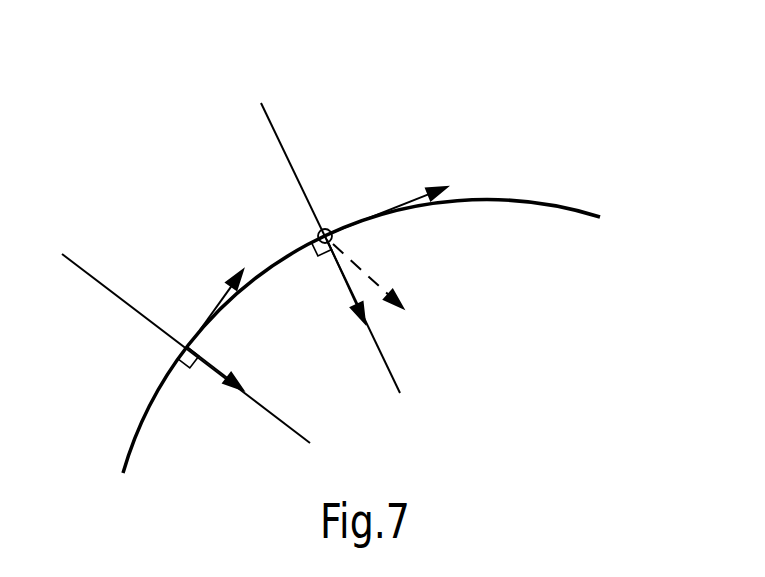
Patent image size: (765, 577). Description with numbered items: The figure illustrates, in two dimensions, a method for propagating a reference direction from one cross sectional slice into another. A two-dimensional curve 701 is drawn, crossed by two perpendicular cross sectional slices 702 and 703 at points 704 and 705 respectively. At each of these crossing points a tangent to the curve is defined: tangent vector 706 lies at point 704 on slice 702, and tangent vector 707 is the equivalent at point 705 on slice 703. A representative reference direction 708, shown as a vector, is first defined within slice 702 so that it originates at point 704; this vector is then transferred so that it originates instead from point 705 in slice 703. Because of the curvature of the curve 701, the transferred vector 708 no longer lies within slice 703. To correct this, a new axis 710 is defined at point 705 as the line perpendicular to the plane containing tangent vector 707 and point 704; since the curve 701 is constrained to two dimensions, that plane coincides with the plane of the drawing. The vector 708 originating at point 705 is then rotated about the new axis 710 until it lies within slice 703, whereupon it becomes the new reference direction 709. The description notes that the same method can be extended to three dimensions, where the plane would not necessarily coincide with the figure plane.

The curve 701 is at (136, 441).
The cross sectional slice 702 is at (88, 273).
The cross sectional slice 703 is at (272, 121).
The point 704 is at (183, 348).
The point 705 is at (330, 228).
The tangent vector 706 is at (213, 312).
The tangent vector 707 is at (410, 200).
The representative reference direction 708 is at (218, 367).
The new reference direction 709 is at (347, 286).
The new axis 710 is at (318, 236).